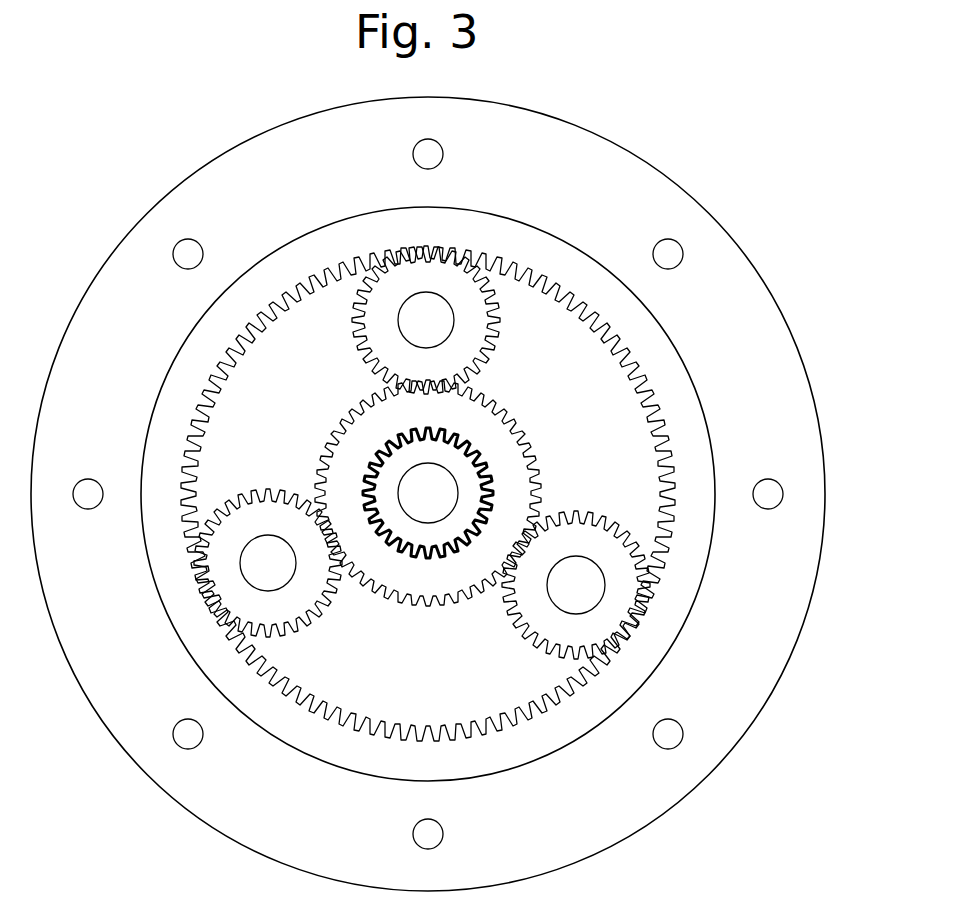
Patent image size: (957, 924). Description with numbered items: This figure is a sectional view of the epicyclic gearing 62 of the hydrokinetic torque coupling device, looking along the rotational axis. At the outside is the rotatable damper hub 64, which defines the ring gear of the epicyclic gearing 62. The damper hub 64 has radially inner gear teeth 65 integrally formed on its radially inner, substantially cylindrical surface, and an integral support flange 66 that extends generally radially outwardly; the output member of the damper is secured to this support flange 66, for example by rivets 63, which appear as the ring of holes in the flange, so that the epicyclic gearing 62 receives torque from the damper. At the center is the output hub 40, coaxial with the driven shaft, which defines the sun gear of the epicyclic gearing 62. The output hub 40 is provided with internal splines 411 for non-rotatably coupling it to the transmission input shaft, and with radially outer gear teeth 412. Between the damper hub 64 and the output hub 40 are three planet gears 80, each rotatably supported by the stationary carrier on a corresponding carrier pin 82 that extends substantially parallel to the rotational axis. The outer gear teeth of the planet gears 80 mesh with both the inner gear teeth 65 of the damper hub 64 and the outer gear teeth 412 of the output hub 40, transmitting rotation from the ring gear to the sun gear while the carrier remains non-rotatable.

The epicyclic gearing 62 is at (196, 160).
The support flange 66 is at (586, 152).
The rivets 63 is at (768, 480).
The damper hub 64 is at (680, 387).
The inner gear teeth 65 is at (596, 328).
The planet gears 80 is at (385, 337).
The carrier pins 82 is at (573, 573).
The output hub 40 is at (452, 525).
The internal splines 411 is at (427, 558).
The outer gear teeth 412 is at (400, 595).